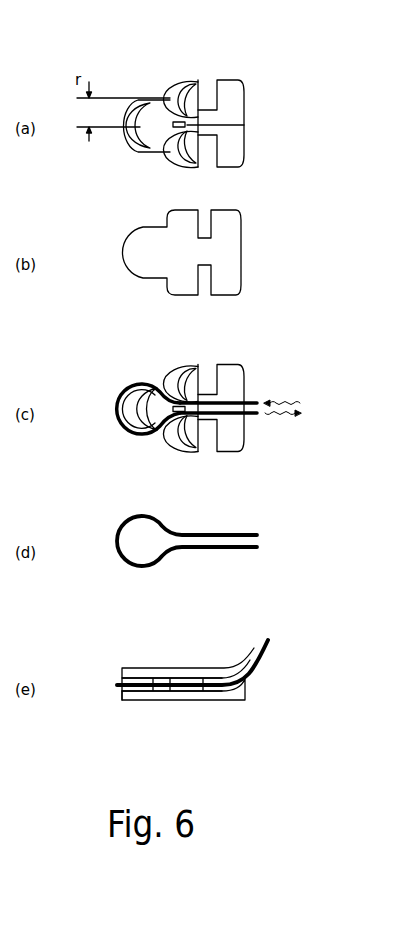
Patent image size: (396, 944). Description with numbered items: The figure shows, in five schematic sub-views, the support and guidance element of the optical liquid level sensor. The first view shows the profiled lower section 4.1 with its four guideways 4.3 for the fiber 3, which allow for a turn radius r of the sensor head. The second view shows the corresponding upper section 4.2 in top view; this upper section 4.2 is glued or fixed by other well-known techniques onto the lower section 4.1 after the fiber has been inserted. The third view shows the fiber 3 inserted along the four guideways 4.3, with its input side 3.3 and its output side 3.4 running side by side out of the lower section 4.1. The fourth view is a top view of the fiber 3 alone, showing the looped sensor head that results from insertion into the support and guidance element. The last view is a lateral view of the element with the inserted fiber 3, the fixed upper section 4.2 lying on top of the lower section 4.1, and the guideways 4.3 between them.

The fiber 3 is at (172, 511).
The input side of the fiber 3.3 is at (258, 373).
The output side of the fiber 3.4 is at (260, 447).
The lower section 4.1 is at (224, 406).
The upper section 4.2 is at (221, 453).
The guideways 4.3 is at (192, 398).